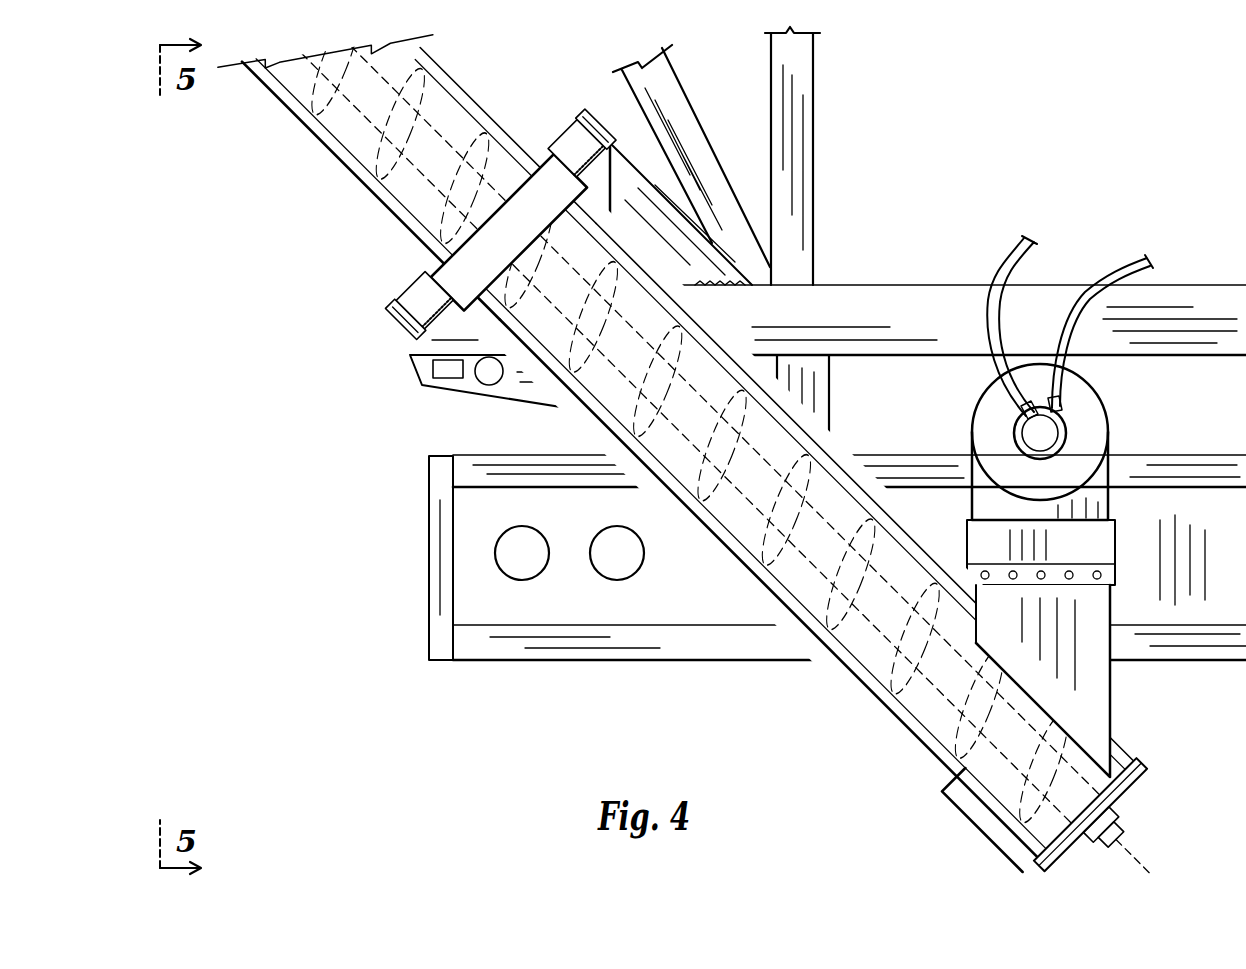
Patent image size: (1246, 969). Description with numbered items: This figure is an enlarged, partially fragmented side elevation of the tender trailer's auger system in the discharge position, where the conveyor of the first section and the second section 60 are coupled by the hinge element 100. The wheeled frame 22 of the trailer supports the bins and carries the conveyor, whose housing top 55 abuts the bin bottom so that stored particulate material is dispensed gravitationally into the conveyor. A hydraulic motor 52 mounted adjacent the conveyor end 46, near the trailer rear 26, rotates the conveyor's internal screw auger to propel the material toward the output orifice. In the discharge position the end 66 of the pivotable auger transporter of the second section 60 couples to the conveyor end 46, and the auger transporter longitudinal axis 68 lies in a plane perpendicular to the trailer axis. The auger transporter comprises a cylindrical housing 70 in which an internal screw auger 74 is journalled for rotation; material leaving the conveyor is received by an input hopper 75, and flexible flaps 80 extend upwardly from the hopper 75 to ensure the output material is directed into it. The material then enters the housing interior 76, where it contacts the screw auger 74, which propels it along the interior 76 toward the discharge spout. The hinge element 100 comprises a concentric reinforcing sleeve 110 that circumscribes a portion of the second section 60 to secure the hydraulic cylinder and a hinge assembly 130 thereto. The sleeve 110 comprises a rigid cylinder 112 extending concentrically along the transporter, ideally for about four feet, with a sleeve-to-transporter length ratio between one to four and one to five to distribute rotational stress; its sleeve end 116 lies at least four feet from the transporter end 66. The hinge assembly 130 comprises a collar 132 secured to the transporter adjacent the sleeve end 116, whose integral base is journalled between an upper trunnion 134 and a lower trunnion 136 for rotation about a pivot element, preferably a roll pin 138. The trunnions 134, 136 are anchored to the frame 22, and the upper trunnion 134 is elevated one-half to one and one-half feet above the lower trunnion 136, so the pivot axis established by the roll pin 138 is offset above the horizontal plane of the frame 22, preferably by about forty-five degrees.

The wheeled frame 22 is at (808, 312).
The trailer rear 26 is at (435, 580).
The conveyor end 46 is at (995, 412).
The hydraulic motor 52 is at (1075, 428).
The housing top 55 is at (1090, 398).
The second section 60 is at (750, 680).
The auger transporter end 66 is at (1090, 814).
The auger transporter longitudinal axis 68 is at (1122, 846).
The cylindrical housing 70 is at (994, 820).
The screw auger 74 is at (817, 540).
The input hopper 75 is at (1100, 680).
The housing interior 76 is at (817, 541).
The flexible flaps 80 is at (1090, 540).
The hinge element 100 is at (694, 484).
The concentric sleeve 110 is at (413, 167).
The rigid cylinder 112 is at (371, 191).
The sleeve end 116 is at (689, 423).
The hinge assembly 130 is at (509, 232).
The collar 132 is at (500, 224).
The upper trunnion 134 is at (596, 129).
The lower trunnion 136 is at (405, 319).
The roll pin 138 is at (613, 72).